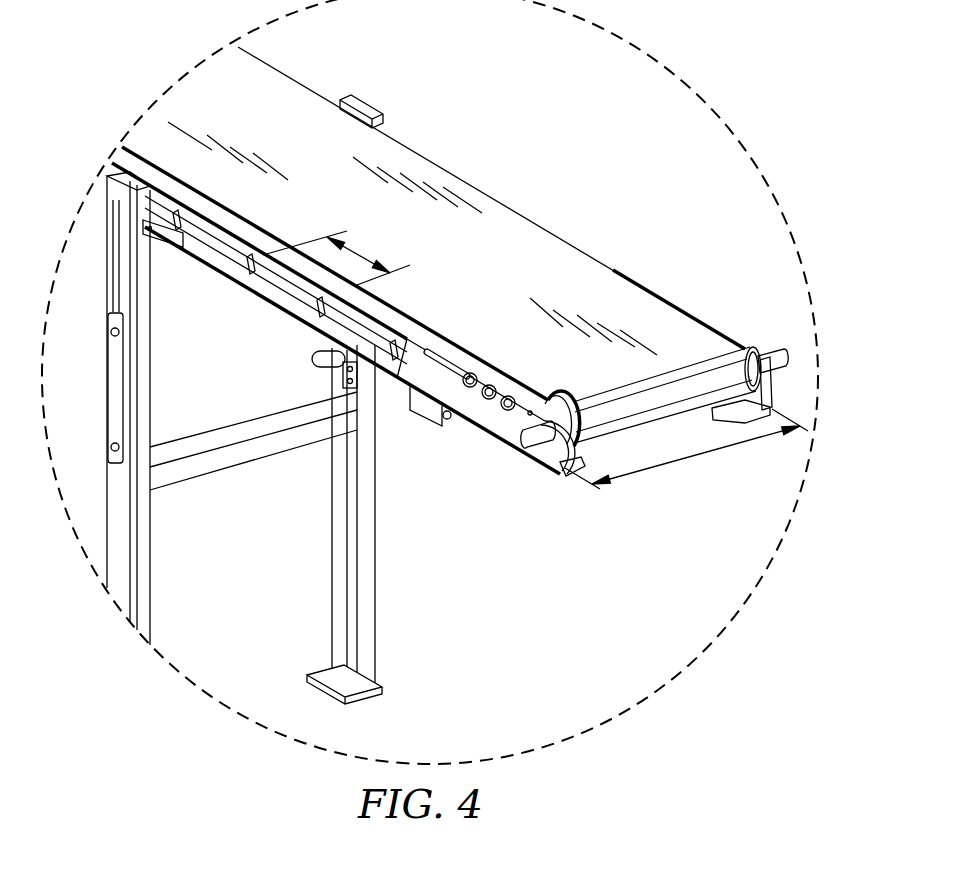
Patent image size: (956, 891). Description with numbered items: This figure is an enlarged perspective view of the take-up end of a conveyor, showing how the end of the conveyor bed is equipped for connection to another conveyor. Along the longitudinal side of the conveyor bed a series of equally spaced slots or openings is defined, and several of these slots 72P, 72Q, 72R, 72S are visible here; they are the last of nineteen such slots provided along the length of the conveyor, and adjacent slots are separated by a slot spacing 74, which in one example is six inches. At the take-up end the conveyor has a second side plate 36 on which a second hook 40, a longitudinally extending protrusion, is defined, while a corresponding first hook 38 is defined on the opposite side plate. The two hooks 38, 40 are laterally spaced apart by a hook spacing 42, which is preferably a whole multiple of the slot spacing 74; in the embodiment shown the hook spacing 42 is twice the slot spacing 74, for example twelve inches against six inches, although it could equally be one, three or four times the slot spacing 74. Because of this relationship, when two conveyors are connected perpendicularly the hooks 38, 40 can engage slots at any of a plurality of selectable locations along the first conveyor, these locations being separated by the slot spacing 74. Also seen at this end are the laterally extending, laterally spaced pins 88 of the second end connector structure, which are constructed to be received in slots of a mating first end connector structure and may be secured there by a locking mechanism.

The slot 72Q is at (107, 178).
The slot 72P is at (240, 272).
The slot 72R is at (320, 316).
The slot 72S is at (337, 366).
The slot spacing 74 is at (363, 256).
The second side plate 36 is at (487, 418).
The pin 88 is at (535, 437).
The second hook 40 is at (568, 478).
The first hook 38 is at (772, 410).
The hook spacing 42 is at (683, 458).